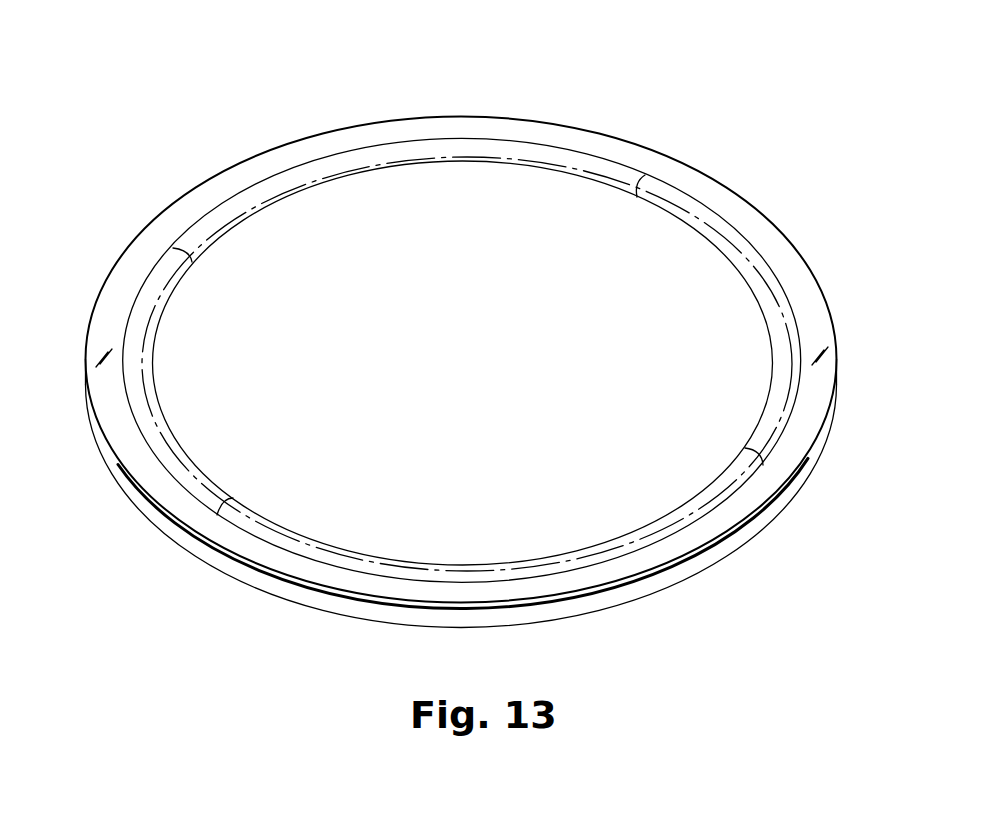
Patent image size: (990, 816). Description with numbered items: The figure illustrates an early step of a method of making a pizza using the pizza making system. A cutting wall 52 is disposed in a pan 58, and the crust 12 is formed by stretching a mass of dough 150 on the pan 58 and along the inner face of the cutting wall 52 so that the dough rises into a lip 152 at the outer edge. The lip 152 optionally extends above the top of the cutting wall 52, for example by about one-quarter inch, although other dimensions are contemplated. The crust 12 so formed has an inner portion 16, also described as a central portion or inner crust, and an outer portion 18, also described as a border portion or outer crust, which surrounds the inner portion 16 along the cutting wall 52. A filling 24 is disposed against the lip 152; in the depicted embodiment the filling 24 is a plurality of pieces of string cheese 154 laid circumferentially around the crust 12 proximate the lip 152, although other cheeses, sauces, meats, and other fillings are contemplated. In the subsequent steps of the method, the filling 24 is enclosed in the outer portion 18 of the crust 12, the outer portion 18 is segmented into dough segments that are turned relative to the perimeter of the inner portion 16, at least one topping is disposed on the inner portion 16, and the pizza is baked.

The crust 12 is at (505, 374).
The inner portion 16 is at (654, 461).
The outer portion 18 is at (797, 430).
The filling 24 is at (405, 168).
The cutting wall 52 is at (562, 603).
The pan 58 is at (391, 617).
The mass of dough 150 is at (677, 288).
The lip 152 is at (353, 139).
The pieces of string cheese 154 is at (232, 216).